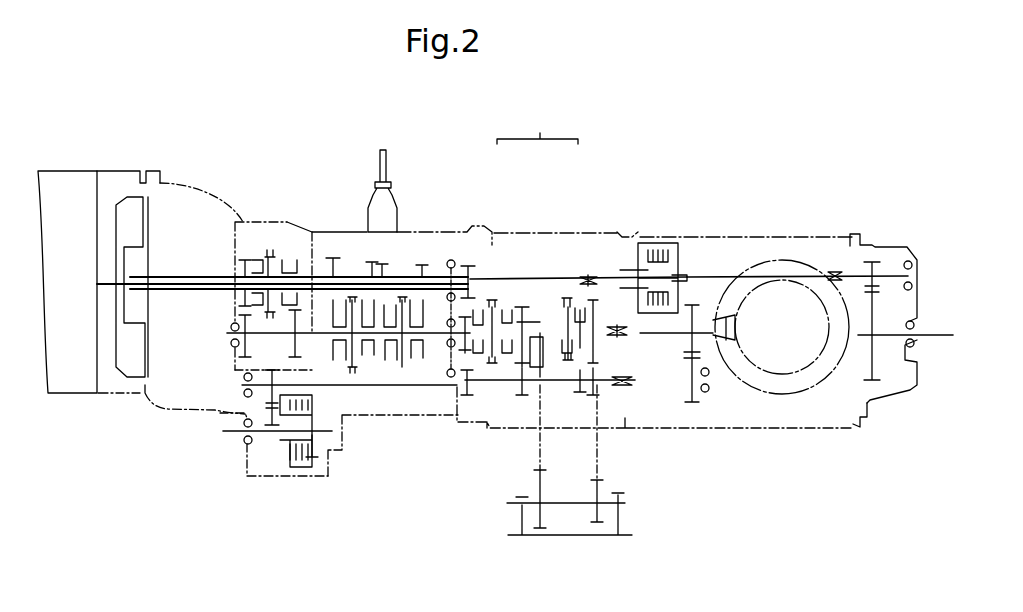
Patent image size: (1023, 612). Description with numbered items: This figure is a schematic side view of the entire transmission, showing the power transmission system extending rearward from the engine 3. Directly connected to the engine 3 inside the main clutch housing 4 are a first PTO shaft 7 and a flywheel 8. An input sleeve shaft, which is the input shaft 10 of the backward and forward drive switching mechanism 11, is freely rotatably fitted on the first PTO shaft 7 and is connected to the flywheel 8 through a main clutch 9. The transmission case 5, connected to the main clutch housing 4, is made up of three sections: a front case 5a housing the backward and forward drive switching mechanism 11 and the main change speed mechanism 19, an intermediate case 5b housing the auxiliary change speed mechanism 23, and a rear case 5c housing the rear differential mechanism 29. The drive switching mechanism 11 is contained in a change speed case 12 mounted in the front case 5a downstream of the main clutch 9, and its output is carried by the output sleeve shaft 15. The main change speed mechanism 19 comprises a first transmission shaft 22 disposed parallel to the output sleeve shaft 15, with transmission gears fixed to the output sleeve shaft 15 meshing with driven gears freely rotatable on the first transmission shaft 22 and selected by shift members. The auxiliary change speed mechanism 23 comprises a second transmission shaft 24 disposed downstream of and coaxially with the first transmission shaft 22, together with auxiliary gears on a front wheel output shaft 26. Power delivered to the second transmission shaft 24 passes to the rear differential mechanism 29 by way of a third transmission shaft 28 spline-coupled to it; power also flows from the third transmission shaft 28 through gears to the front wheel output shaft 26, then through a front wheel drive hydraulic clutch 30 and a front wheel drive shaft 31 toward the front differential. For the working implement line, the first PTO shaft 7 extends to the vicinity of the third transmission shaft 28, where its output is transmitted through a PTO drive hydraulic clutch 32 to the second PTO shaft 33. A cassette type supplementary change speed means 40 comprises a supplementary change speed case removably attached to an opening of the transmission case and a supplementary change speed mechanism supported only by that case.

The engine 3 is at (67, 171).
The main clutch housing 4 is at (141, 170).
The transmission case 5 is at (537, 127).
The front case 5a is at (468, 225).
The intermediate case 5b is at (528, 232).
The rear case 5c is at (652, 238).
The first PTO shaft 7 is at (177, 290).
The flywheel 8 is at (127, 212).
The main clutch 9 is at (163, 200).
The input shaft 10 is at (200, 272).
The backward and forward drive switching mechanism 11 is at (287, 238).
The change speed case 12 is at (250, 223).
The output sleeve shaft 15 is at (317, 265).
The main change speed mechanism 19 is at (417, 252).
The first transmission shaft 22 is at (445, 368).
The auxiliary change speed mechanism 23 is at (530, 293).
The second transmission shaft 24 is at (555, 384).
The front wheel output shaft 26 is at (382, 387).
The third transmission shaft 28 is at (663, 336).
The rear differential mechanism 29 is at (742, 363).
The front wheel drive hydraulic clutch 30 is at (313, 453).
The front wheel drive shaft 31 is at (233, 433).
The PTO drive hydraulic clutch 32 is at (683, 248).
The second PTO shaft 33 is at (735, 276).
The cassette type supplementary change speed means 40 is at (925, 267).